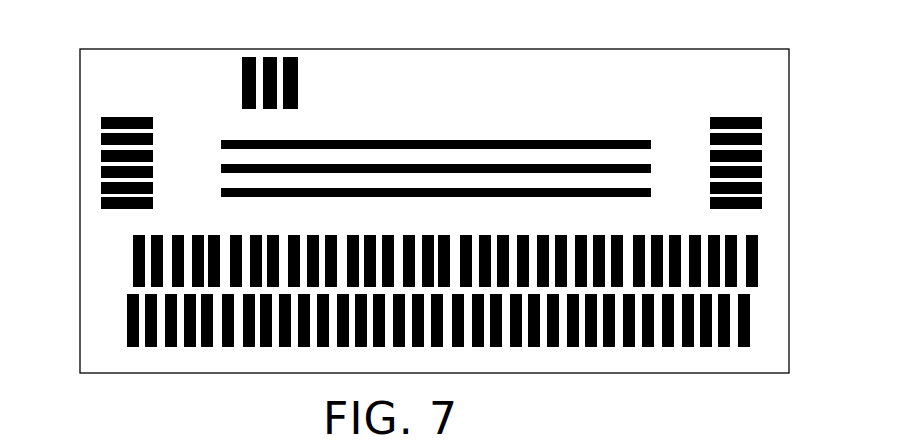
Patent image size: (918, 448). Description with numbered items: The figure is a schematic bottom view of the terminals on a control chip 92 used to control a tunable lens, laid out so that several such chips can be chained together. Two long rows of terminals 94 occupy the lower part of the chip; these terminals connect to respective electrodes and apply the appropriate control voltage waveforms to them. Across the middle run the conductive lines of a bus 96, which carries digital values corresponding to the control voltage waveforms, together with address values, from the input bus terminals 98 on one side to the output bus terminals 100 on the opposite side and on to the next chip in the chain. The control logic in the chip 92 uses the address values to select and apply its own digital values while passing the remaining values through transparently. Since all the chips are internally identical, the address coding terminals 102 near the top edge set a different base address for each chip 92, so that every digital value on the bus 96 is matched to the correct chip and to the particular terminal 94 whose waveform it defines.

The control chip 92 is at (789, 80).
The terminals 94 is at (135, 263).
The bus 96 is at (619, 188).
The input bus terminals 98 is at (101, 123).
The output bus terminals 100 is at (762, 123).
The address coding terminals 102 is at (291, 57).